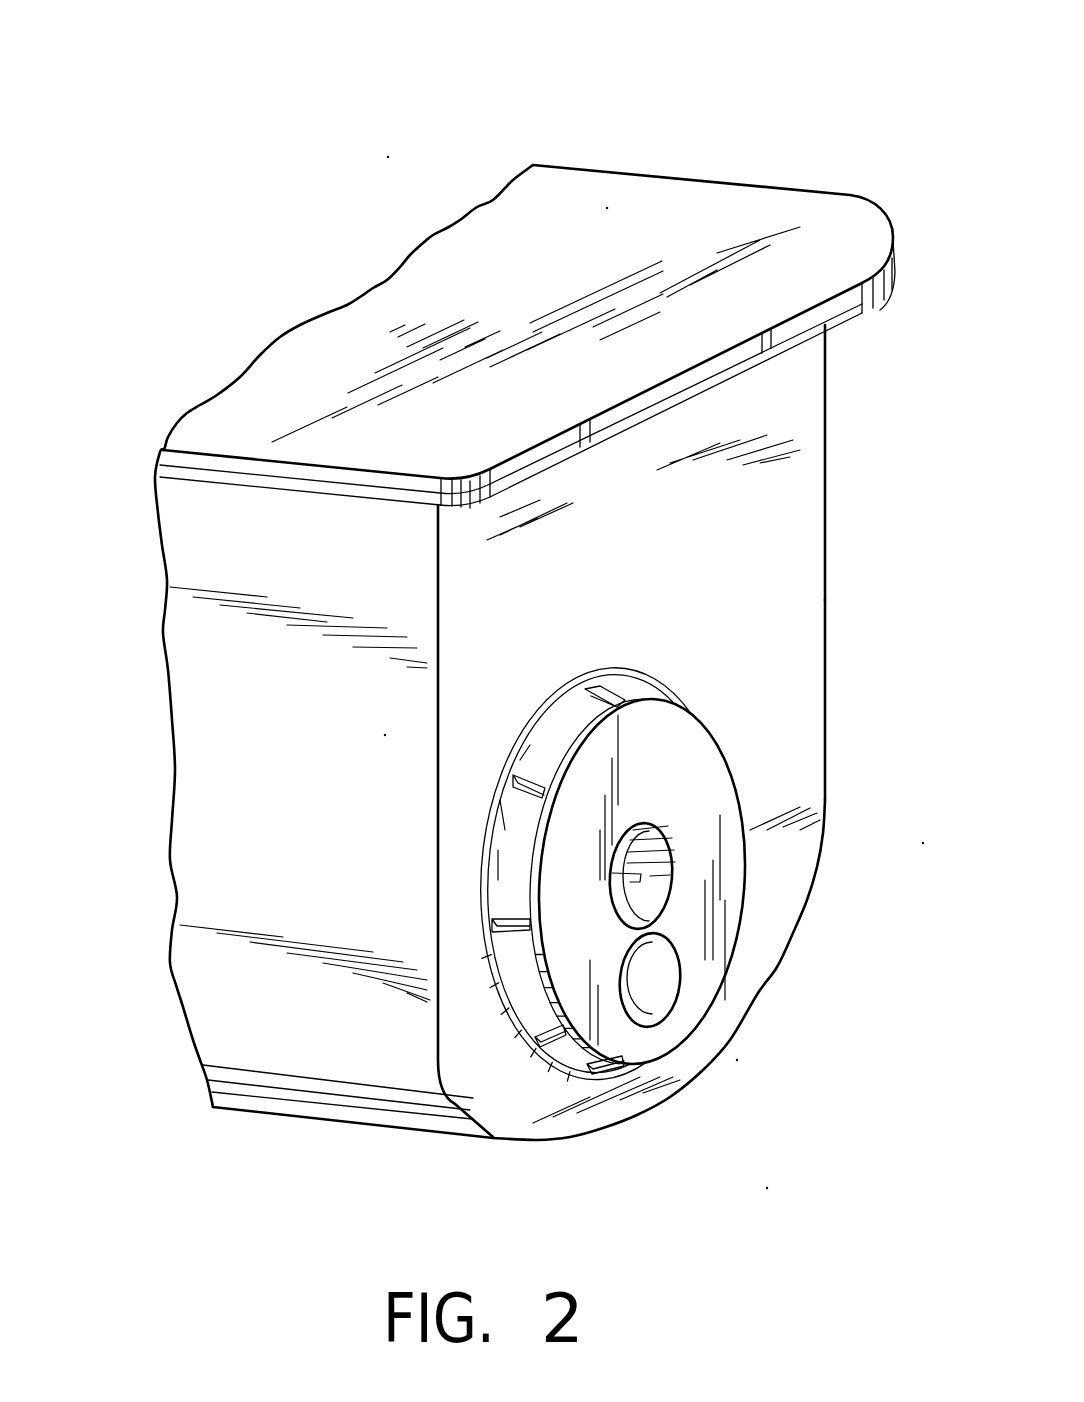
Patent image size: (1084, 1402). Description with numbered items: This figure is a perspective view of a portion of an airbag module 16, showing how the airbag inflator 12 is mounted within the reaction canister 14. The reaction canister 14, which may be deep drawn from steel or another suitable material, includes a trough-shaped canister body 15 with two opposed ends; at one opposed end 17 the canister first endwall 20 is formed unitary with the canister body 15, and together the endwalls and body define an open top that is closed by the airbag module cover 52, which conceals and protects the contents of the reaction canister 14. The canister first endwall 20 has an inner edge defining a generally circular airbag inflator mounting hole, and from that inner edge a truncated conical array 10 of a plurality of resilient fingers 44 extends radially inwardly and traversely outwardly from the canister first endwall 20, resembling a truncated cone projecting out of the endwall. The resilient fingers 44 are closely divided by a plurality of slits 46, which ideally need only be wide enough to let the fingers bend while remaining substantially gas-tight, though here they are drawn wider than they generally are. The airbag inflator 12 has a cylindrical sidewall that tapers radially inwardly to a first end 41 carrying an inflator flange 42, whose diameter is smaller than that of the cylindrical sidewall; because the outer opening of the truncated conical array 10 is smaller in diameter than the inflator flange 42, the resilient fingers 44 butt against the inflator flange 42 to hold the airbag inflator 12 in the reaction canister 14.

The airbag module 16 is at (503, 122).
The airbag module cover 52 is at (611, 188).
The reaction canister 14 is at (206, 526).
The canister body 15 is at (297, 1117).
The canister first endwall 20 is at (795, 397).
The opposed end 17 is at (803, 508).
The airbag inflator 12 is at (684, 754).
The truncated conical array 10 is at (619, 690).
The inflator flange 42 is at (567, 750).
The first end 41 is at (717, 792).
The slits 46 is at (535, 793).
The resilient fingers 44 is at (523, 1013).